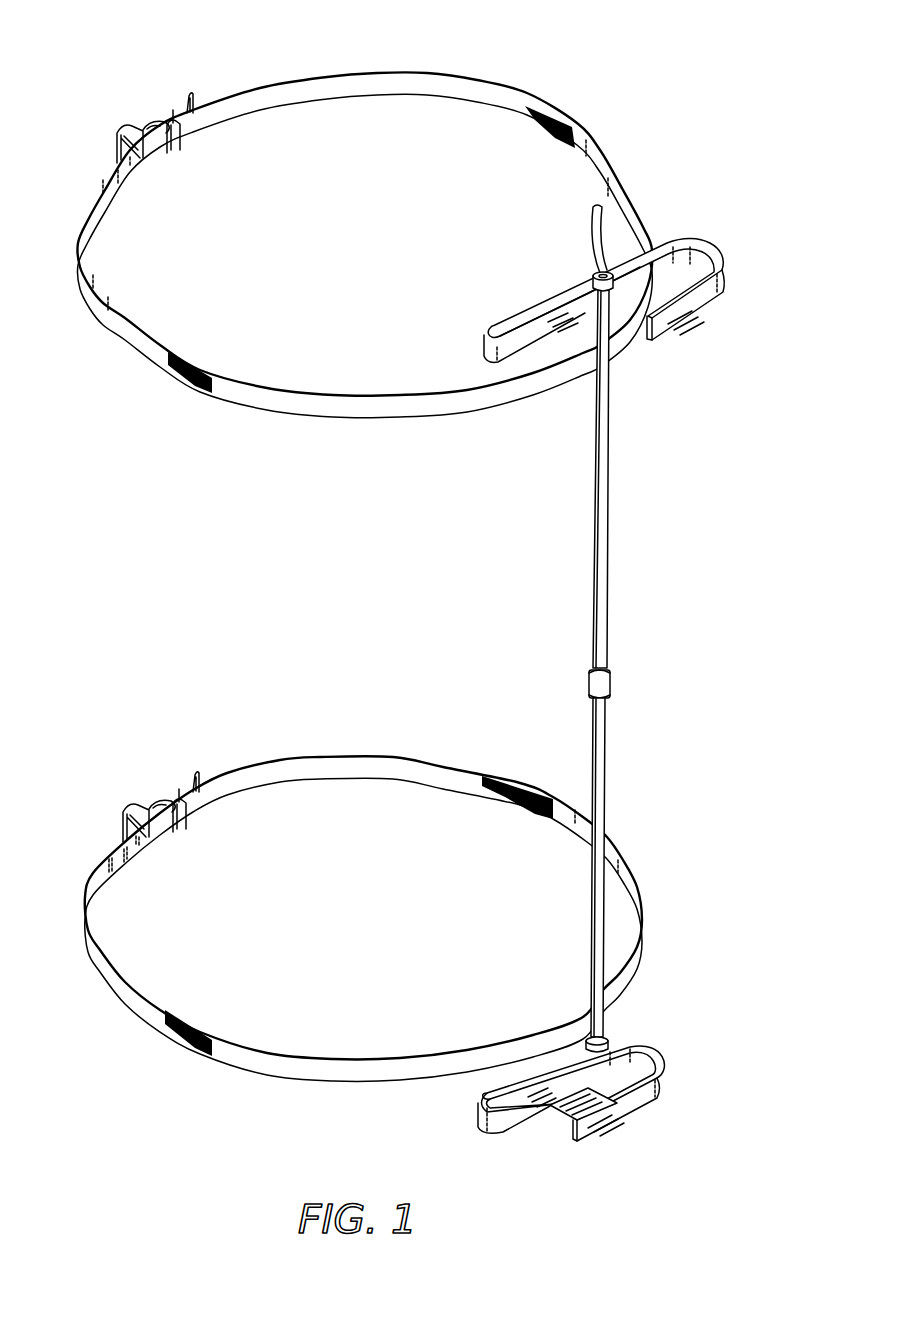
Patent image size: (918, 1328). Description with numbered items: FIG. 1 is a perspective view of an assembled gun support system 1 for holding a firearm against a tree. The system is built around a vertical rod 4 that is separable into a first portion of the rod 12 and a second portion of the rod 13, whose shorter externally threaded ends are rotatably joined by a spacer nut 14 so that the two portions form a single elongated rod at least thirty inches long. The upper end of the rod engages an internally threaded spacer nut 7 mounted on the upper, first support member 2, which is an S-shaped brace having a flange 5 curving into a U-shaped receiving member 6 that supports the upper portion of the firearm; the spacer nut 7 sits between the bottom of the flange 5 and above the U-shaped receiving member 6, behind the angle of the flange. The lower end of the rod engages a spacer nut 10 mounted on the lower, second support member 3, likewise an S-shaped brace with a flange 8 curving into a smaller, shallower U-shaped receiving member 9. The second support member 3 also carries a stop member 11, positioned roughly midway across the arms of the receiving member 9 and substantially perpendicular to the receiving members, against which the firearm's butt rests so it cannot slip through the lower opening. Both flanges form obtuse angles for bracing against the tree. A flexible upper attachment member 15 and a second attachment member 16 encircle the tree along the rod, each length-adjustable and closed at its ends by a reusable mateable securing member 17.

The gun support system 1 is at (597, 92).
The first support member 2 is at (614, 258).
The second support member 3 is at (589, 1090).
The rod 4 is at (599, 662).
The flange 5 is at (537, 300).
The U-shaped receiving member 6 is at (708, 248).
The spacer nut 7 is at (606, 272).
The flange 8 is at (512, 1082).
The U-shaped receiving member 9 is at (668, 1068).
The spacer nut 10 is at (608, 1046).
The stop member 11 is at (570, 1120).
The first portion of the rod 12 is at (608, 523).
The second portion of the rod 13 is at (605, 765).
The spacer nut 14 is at (610, 683).
The attachment member 15 is at (462, 82).
The second attachment member 16 is at (430, 757).
The securing member 17 is at (143, 130).